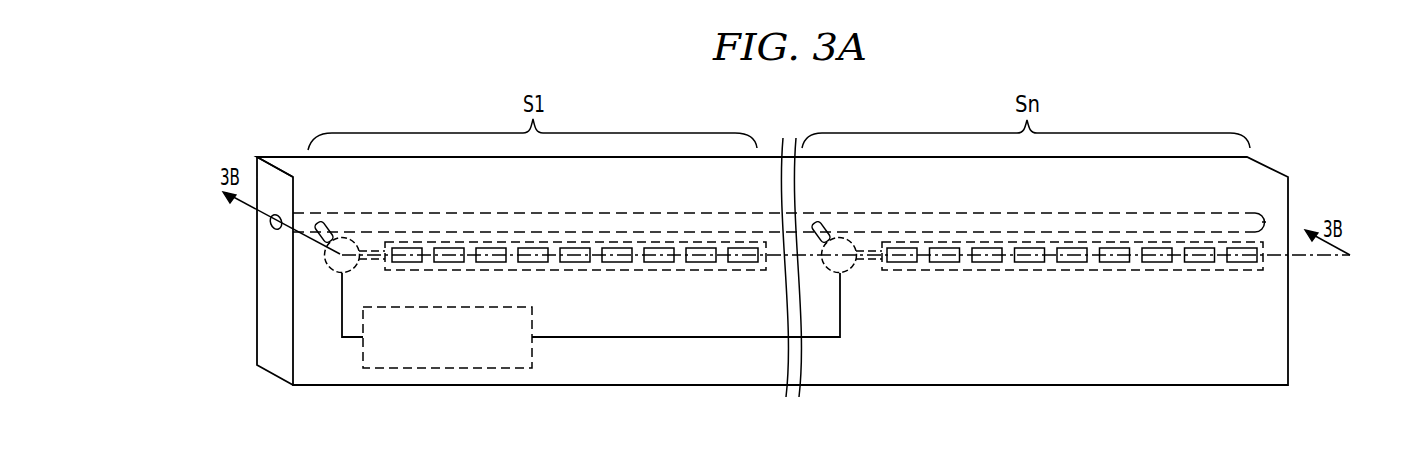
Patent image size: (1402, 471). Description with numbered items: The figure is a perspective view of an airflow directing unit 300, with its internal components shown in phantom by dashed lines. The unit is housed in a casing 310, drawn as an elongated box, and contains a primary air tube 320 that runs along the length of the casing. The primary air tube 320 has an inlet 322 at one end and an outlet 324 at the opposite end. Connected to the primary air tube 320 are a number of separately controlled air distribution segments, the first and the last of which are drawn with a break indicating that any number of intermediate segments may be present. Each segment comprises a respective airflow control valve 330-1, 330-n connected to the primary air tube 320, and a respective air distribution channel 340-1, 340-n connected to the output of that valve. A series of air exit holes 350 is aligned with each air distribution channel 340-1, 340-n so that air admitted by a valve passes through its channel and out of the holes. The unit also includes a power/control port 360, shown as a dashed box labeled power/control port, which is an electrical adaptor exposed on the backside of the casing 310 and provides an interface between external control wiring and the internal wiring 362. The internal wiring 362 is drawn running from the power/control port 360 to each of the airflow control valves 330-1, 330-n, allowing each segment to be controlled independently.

The airflow directing unit 300 is at (808, 102).
The casing 310 is at (1288, 352).
The primary air tube 320 is at (387, 213).
The inlet 322 is at (270, 227).
The outlet 324 is at (1264, 222).
The airflow control valve 330-1 is at (324, 266).
The airflow control valve 330-n is at (847, 270).
The air distribution channel 340-1 is at (698, 271).
The air distribution channel 340-n is at (1162, 271).
The air exit holes 350 is at (540, 262).
The power/control port 360 is at (363, 352).
The internal wiring 362 is at (344, 294).